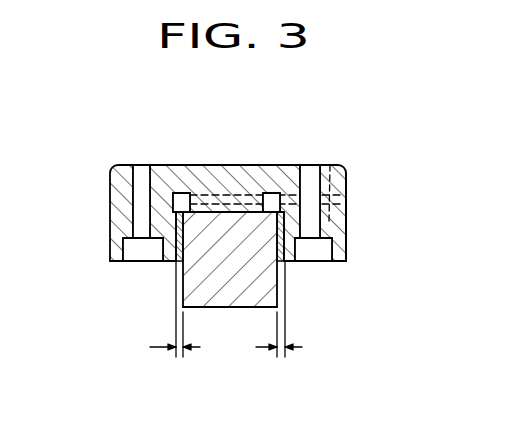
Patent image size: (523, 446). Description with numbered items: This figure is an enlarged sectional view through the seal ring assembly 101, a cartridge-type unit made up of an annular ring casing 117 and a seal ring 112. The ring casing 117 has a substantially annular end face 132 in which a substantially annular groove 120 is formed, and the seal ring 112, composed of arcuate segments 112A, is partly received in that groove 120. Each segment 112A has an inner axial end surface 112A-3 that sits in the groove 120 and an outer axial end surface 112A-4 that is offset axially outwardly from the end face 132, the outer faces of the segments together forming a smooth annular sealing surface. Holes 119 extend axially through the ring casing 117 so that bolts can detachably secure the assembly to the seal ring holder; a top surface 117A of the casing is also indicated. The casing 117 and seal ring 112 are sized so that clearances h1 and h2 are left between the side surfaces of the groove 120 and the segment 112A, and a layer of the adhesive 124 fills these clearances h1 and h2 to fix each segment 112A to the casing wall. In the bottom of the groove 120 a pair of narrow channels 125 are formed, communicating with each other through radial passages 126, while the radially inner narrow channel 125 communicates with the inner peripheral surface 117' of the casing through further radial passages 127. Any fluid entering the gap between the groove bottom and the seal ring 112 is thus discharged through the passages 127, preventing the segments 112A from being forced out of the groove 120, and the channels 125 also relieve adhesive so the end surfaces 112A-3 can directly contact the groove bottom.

The seal ring assembly 101 is at (356, 172).
The seal ring 112 is at (218, 318).
The segment 112A is at (197, 283).
The axial end surface 112A-3 is at (213, 203).
The axial end surface 112A-4 is at (246, 308).
The ring casing 117 is at (192, 216).
The inner peripheral surface 117' is at (406, 218).
The top surface of holder 117A is at (157, 165).
The hole 119 is at (140, 200).
The groove 120 is at (322, 227).
The adhesive 124 is at (292, 262).
The narrow channel 125 is at (185, 193).
The passage 126 is at (260, 233).
The further passage 127 is at (330, 165).
The end face 132 is at (340, 262).
The clearance h1 is at (286, 295).
The clearance h2 is at (174, 295).